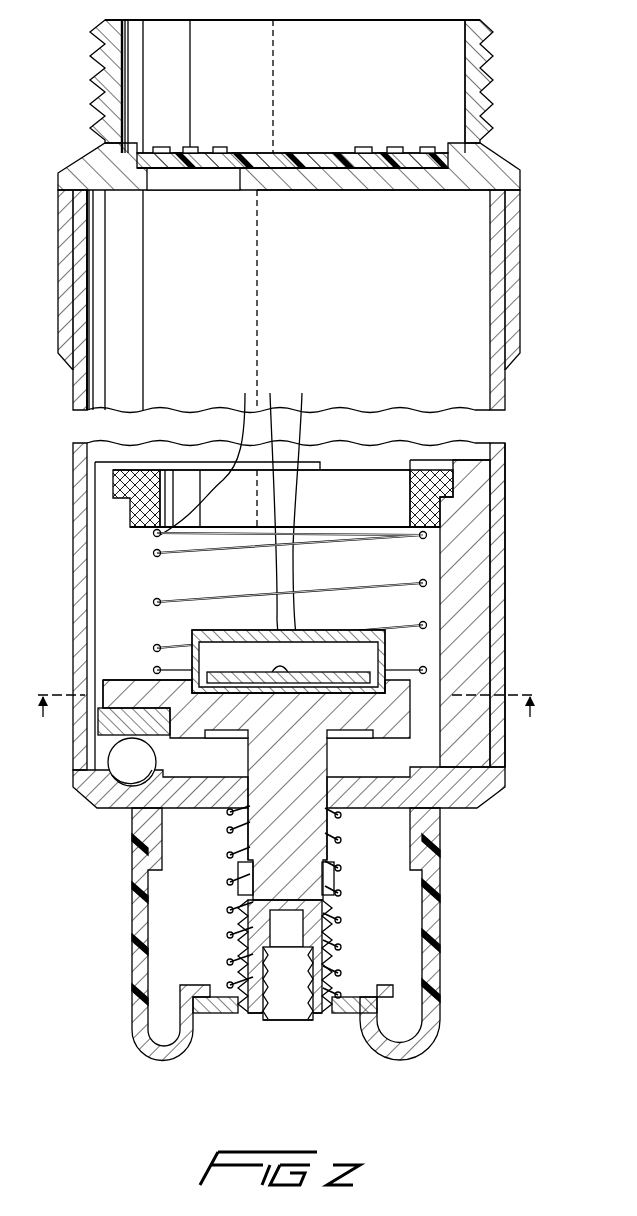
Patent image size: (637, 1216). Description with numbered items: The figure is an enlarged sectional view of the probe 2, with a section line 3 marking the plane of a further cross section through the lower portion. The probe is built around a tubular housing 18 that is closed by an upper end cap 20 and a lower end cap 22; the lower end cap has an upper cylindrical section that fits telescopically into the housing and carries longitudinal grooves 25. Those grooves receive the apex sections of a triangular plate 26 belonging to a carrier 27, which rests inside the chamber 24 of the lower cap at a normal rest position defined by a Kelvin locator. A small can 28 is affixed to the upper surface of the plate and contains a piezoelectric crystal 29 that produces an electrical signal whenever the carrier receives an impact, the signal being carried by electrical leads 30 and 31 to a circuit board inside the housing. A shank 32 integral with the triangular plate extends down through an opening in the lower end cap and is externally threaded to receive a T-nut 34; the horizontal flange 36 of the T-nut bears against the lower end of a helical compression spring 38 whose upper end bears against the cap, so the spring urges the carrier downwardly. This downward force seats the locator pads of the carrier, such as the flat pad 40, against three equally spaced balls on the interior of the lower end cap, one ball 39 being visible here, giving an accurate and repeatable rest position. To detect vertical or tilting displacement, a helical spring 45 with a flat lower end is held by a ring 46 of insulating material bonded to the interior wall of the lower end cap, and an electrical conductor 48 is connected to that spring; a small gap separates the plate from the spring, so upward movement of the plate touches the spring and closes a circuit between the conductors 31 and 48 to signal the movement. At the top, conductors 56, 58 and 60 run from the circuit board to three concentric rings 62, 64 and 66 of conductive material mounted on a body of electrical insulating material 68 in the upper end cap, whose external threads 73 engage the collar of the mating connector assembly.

The probe 2 is at (508, 500).
The section line 3- 3 is at (281, 707).
The tubular housing 18 is at (500, 453).
The upper end cap 20 is at (493, 157).
The lower end cap 22 is at (473, 615).
The housing chamber 24 is at (105, 582).
The longitudinal grooves 25 is at (367, 470).
The triangular plate 26 is at (103, 692).
The carrier 27 is at (113, 676).
The small can 28 is at (187, 630).
The piezoelectric crystal 29 is at (236, 673).
The electrical lead 30 is at (273, 510).
The electrical lead 31 is at (308, 485).
The shank 32 is at (260, 835).
The T-nut 34 is at (323, 915).
The horizontal flange 36 is at (363, 1013).
The helical compression spring 38 is at (338, 950).
The ball 39 is at (110, 758).
The locator pad 40 is at (103, 717).
The helical spring 45 is at (217, 597).
The ring 46 is at (110, 481).
The electrical conductor 48 is at (220, 470).
The conductor 56 is at (178, 268).
The conductor 58 is at (240, 265).
The conductor 60 is at (327, 263).
The concentric ring 62 is at (200, 297).
The concentric ring 64 is at (257, 280).
The concentric ring 66 is at (262, 278).
The body of electrical insulating material 68 is at (312, 153).
The external threads 73 is at (483, 80).